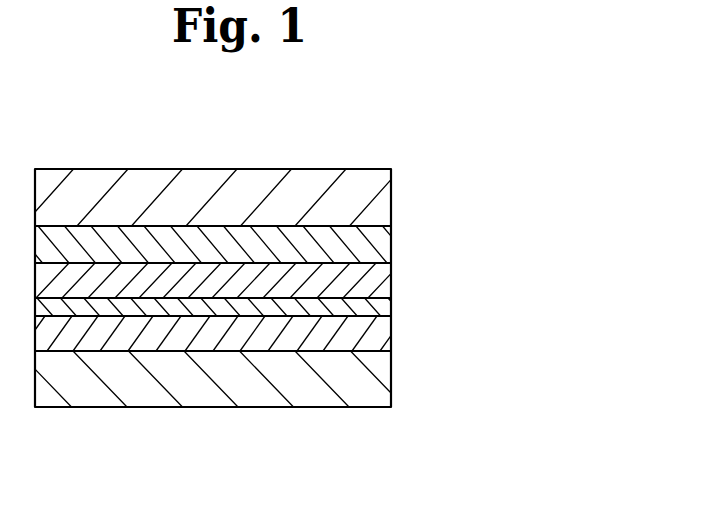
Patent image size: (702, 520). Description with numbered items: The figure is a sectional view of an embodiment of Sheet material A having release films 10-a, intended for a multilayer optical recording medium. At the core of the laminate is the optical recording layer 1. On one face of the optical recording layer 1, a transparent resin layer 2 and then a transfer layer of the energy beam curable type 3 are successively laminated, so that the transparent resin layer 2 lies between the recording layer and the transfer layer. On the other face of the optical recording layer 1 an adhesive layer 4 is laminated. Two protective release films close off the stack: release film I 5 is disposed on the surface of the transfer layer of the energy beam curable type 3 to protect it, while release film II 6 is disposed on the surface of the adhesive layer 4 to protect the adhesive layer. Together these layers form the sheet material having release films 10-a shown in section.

The sheet material having release films 10-a is at (371, 149).
The release film I 5 is at (373, 193).
The transfer layer of the energy beam curable type 3 is at (375, 240).
The transparent resin layer 2 is at (375, 277).
The optical recording layer 1 is at (370, 305).
The adhesive layer 4 is at (375, 333).
The release film II 6 is at (370, 375).